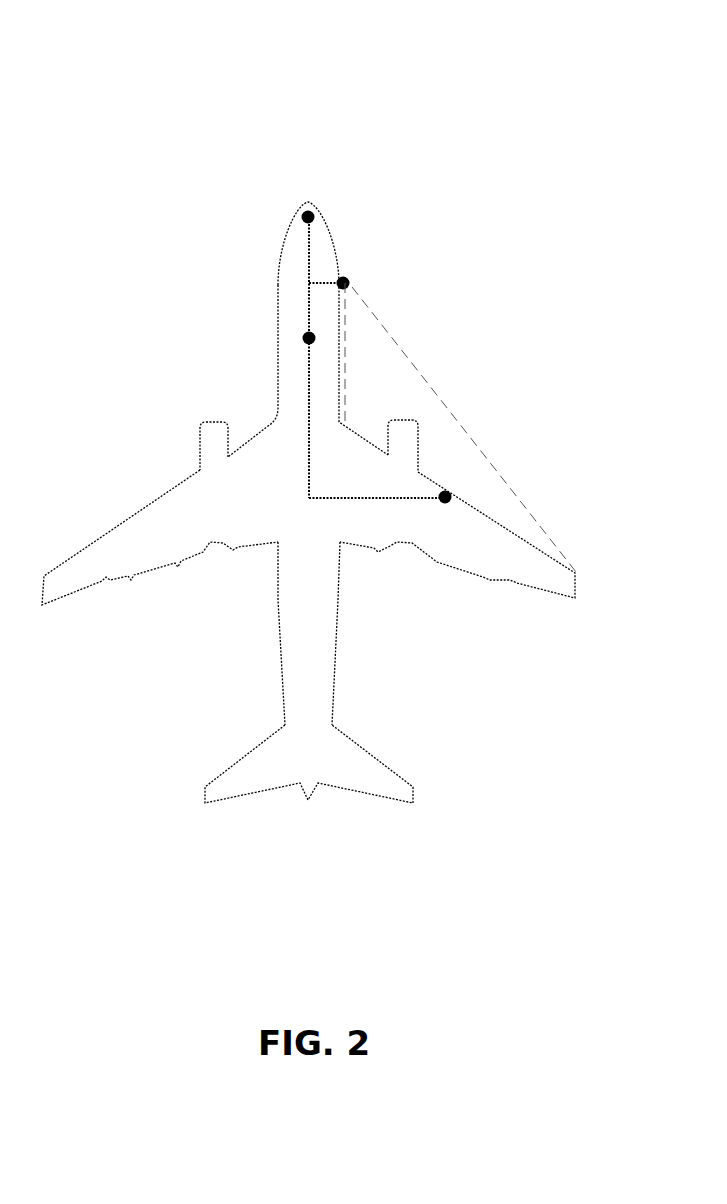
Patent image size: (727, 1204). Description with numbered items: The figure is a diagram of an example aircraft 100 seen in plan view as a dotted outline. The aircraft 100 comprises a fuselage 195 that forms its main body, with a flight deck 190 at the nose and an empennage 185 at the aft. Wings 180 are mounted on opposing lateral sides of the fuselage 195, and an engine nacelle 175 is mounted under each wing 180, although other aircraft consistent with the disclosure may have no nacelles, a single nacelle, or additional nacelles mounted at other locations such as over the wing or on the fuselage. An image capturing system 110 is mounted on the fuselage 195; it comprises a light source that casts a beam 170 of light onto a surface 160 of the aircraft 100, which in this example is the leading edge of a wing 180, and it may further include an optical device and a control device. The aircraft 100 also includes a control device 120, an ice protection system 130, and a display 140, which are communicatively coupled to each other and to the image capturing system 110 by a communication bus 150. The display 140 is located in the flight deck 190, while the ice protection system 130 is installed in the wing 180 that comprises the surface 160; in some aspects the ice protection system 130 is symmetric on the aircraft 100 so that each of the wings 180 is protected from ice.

The aircraft 100 is at (117, 82).
The image capturing system 110 is at (349, 279).
The control device 120 is at (305, 334).
The ice protection system 130 is at (449, 502).
The display 140 is at (316, 212).
The communication bus 150 is at (309, 387).
The surface 160 is at (352, 430).
The beam 170 is at (378, 355).
The engine nacelle 175 is at (212, 417).
The wings 180 is at (180, 535).
The empennage 185 is at (158, 713).
The flight deck 190 is at (271, 202).
The fuselage 195 is at (335, 161).